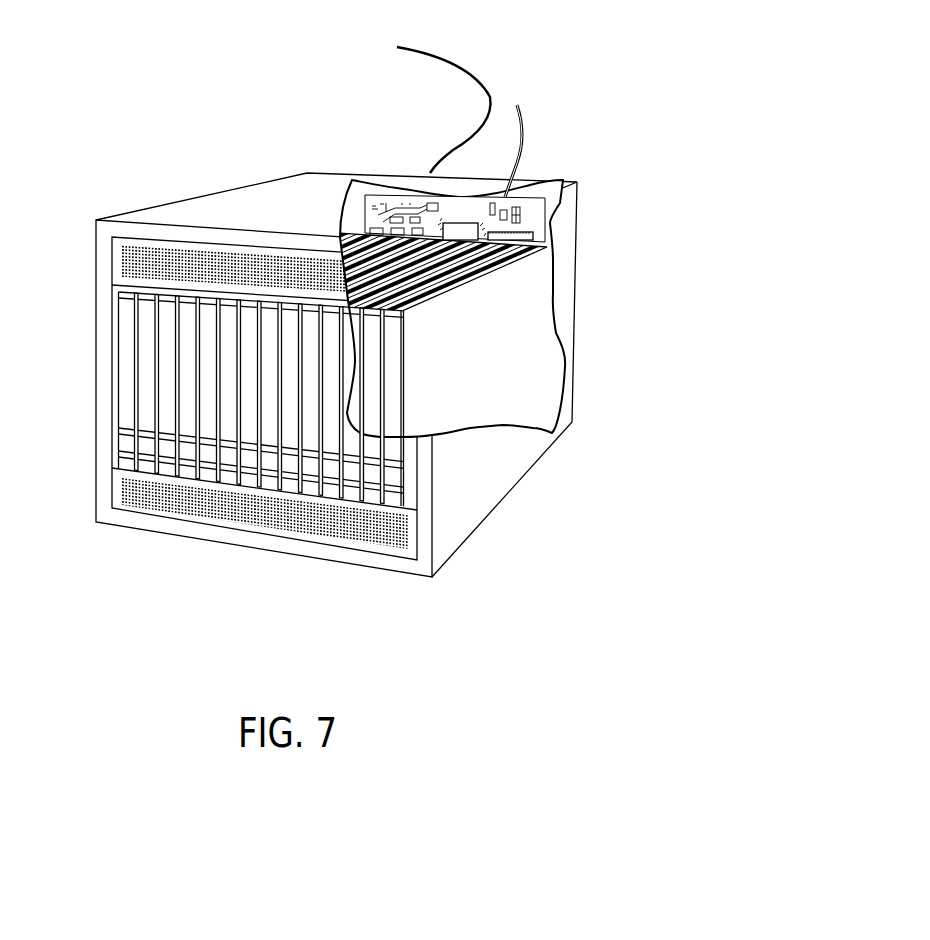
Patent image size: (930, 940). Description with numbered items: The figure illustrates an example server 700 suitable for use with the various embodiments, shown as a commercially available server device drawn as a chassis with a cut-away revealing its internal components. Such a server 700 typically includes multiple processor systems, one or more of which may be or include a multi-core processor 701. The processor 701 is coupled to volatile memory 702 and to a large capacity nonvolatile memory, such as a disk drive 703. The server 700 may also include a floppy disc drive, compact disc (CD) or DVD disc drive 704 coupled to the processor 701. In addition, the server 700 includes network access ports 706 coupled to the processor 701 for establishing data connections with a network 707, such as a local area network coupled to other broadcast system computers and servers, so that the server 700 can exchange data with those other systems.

The server 700 is at (245, 187).
The multi-core processor 701 is at (463, 231).
The volatile memory 702 is at (528, 235).
The disk drive 703 is at (163, 347).
The floppy disc drive, compact disc (CD) or DVD disc drive 704 is at (145, 373).
The network access ports 706 is at (365, 232).
The network 707 is at (490, 92).